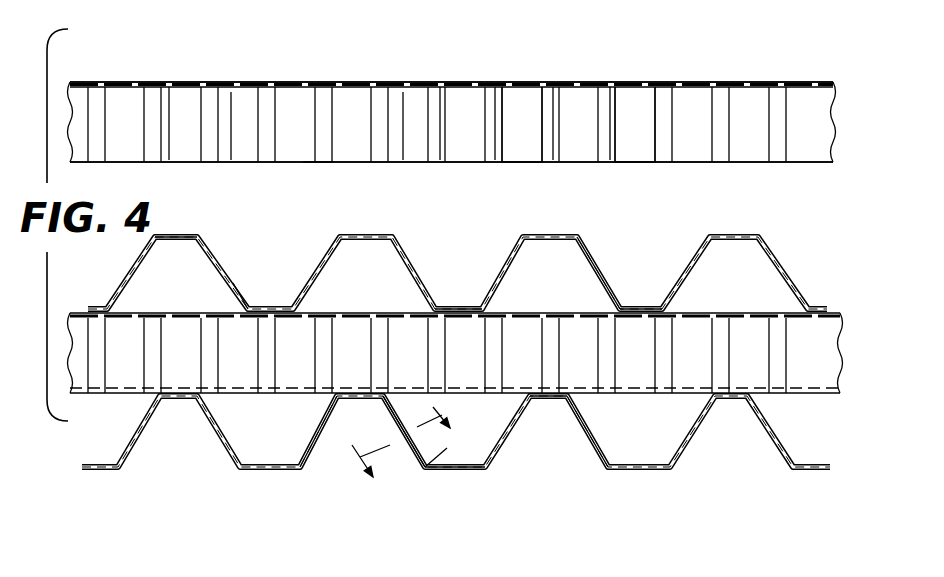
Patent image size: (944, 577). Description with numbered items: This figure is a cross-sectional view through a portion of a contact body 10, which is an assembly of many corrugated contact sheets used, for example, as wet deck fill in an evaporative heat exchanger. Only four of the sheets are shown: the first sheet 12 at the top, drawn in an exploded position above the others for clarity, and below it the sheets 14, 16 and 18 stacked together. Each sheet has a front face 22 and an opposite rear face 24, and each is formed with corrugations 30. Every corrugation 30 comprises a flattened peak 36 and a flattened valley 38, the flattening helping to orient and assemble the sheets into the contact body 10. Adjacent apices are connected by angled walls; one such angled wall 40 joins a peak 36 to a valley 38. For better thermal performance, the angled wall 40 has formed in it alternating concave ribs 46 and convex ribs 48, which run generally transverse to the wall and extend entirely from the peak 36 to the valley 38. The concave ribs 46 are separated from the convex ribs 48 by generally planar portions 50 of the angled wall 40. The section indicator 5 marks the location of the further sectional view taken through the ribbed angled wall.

The contact body 10 is at (138, 472).
The first sheet 12 is at (452, 106).
The sheet 14 is at (780, 262).
The sheet 16 is at (813, 345).
The sheet 18 is at (792, 438).
The front face 22 is at (138, 82).
The rear face 24 is at (230, 166).
The corrugation 30 is at (231, 90).
The peak 36 is at (168, 85).
The valley 38 is at (303, 164).
The angled wall 40 is at (403, 108).
The concave rib 46 is at (440, 100).
The convex rib 48 is at (495, 100).
The planar portion 50 is at (520, 138).
The section line 5- 5 is at (412, 458).